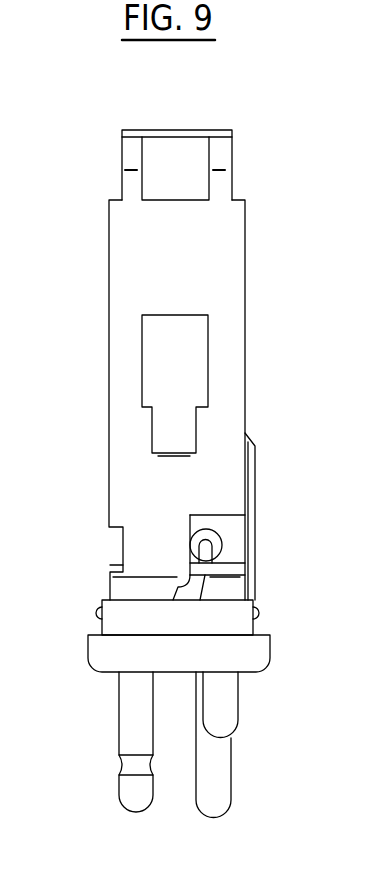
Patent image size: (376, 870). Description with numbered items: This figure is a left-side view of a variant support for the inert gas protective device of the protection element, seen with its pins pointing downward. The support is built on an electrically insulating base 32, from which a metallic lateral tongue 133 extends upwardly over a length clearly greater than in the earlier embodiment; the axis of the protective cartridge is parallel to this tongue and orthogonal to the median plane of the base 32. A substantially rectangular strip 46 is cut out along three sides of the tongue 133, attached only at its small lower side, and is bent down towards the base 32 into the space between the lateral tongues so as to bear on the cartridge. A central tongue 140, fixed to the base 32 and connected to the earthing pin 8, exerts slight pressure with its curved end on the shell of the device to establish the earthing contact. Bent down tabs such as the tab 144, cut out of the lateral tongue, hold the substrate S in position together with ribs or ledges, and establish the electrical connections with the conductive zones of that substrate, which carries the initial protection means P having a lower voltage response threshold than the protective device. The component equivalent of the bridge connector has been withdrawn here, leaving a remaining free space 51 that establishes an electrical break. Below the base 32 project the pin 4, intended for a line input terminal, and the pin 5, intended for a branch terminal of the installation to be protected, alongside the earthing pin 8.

The lateral tongue 133 is at (128, 437).
The strip 46 is at (170, 453).
The bent down tab 144 is at (108, 563).
The initial protection means P is at (222, 530).
The substrate S is at (230, 563).
The free space 51 is at (193, 586).
The central tongue 140 is at (252, 521).
The base 32 is at (117, 620).
The pin 4 is at (128, 723).
The pin 5 is at (220, 708).
The earthing pin 8 is at (220, 785).